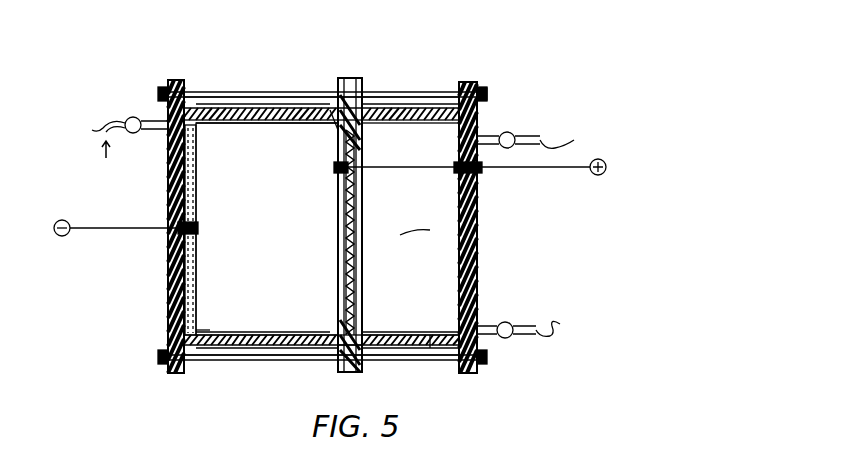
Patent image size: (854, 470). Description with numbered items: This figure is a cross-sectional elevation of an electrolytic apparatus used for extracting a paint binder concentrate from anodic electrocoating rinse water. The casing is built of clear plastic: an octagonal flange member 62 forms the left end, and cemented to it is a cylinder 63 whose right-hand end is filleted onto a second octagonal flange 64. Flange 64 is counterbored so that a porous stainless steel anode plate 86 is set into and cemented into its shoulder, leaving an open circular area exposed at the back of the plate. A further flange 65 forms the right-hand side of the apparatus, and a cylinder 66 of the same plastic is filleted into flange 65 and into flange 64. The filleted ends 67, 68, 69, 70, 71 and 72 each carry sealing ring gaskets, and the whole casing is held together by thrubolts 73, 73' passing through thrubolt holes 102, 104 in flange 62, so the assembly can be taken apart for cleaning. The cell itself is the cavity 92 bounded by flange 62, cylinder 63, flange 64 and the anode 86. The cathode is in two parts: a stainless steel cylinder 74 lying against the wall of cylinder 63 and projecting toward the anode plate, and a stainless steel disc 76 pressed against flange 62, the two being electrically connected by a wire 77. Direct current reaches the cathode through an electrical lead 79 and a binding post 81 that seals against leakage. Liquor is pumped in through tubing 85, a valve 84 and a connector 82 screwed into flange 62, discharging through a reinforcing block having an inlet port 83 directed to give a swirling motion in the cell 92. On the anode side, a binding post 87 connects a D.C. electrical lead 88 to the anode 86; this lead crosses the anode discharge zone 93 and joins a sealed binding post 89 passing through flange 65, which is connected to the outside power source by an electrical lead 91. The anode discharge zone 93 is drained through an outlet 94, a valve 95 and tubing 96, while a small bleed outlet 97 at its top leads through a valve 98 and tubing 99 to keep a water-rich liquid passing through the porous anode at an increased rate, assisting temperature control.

The octagonal flange member 62 is at (180, 92).
The cylinder 63 is at (234, 100).
The octagonal flange 64 is at (360, 95).
The flange 65 is at (476, 96).
The cylinder 66 is at (416, 108).
The filleted end 67 is at (332, 110).
The filleted end 68 is at (410, 228).
The filleted end 69 is at (488, 100).
The filleted end 70 is at (432, 340).
The filleted end 71 is at (386, 334).
The filleted end 72 is at (340, 350).
The thrubolt 73 is at (263, 69).
The thrubolt 73' is at (263, 309).
The cathode cylinder 74 is at (276, 123).
The cathode disc 76 is at (197, 252).
The wire 77 is at (198, 326).
The electrical lead 79 is at (108, 230).
The binding post 81 is at (178, 224).
The connector 82 is at (162, 130).
The inlet port 83 is at (205, 126).
The valve 84 is at (130, 117).
The tubing 85 is at (93, 139).
The anode plate 86 is at (346, 246).
The binding post 87 is at (334, 168).
The electrical lead 88 is at (406, 168).
The sealed binding post 89 is at (482, 168).
The electrical lead 91 is at (560, 168).
The cavity 92 is at (246, 356).
The anode discharge zone 93 is at (430, 232).
The outlet 94 is at (480, 328).
The valve 95 is at (514, 324).
The tubing 96 is at (557, 323).
The bleed outlet 97 is at (498, 132).
The valve 98 is at (520, 136).
The tubing 99 is at (570, 139).
The thrubolt hole 102 is at (166, 92).
The thrubolt hole 104 is at (165, 360).